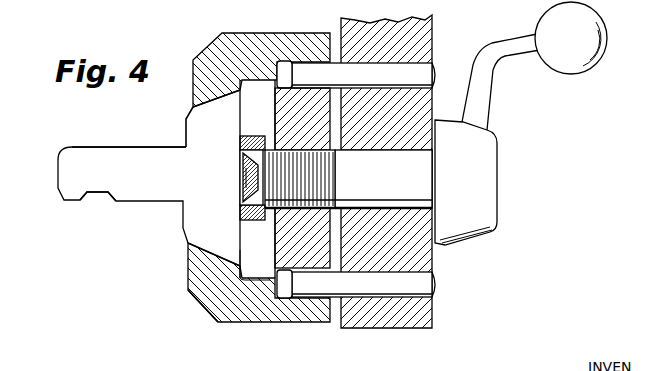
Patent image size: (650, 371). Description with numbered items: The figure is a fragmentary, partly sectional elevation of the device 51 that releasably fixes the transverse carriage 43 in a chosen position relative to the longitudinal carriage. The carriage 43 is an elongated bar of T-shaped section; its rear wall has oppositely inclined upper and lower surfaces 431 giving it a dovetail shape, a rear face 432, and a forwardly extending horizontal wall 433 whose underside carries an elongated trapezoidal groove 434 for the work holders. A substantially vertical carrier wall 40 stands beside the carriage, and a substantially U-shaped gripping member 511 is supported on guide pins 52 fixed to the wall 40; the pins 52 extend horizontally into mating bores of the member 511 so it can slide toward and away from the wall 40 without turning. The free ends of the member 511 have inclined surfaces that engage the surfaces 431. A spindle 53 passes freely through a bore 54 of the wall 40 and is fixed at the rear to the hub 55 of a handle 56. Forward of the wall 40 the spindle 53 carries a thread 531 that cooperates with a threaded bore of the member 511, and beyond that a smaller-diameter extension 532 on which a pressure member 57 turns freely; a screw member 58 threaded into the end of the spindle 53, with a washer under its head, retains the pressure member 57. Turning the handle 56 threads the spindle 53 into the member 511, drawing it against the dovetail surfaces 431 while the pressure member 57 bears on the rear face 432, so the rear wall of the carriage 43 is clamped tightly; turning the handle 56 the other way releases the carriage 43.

The carrier wall 40 is at (388, 318).
The transverse carriage 43 is at (181, 221).
The inclined upper and lower surfaces 431 is at (213, 102).
The rear face 432 is at (236, 248).
The horizontal wall 433 is at (134, 160).
The elongated groove 434 is at (110, 198).
The device 51 is at (193, 308).
The gripping member 511 is at (252, 312).
The guide pins 52 is at (412, 70).
The spindle 53 is at (383, 179).
The thread 531 is at (297, 160).
The extension 532 is at (258, 192).
The bore 54 is at (382, 130).
The hub 55 is at (467, 220).
The handle 56 is at (518, 54).
The pressure member 57 is at (252, 136).
The screw member 58 is at (240, 180).